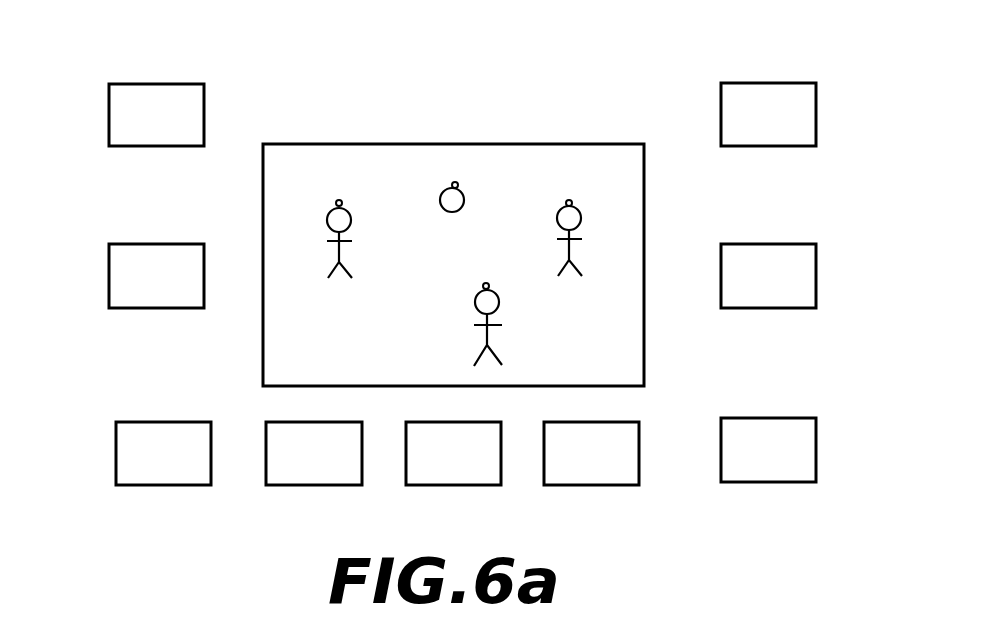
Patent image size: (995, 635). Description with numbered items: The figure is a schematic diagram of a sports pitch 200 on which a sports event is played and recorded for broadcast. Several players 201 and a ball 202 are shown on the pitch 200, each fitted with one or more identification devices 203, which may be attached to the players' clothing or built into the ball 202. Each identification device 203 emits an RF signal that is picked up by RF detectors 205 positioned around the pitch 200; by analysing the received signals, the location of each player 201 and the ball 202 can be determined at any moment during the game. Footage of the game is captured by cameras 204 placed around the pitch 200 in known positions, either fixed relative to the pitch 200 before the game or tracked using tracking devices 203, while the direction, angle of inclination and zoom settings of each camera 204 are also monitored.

The pitch 200 is at (477, 143).
The players 201 is at (342, 270).
The ball 202 is at (465, 198).
The identification devices 203 is at (341, 200).
The cameras 204 is at (108, 278).
The RF detectors 205 is at (108, 130).